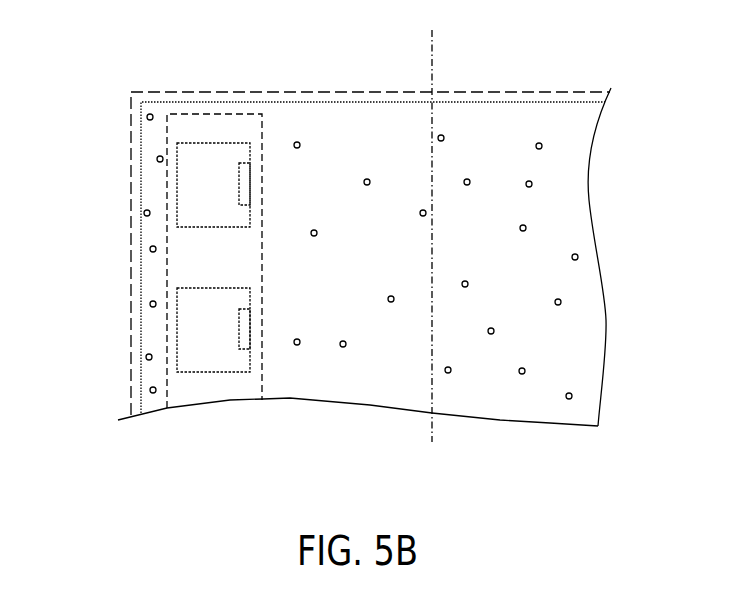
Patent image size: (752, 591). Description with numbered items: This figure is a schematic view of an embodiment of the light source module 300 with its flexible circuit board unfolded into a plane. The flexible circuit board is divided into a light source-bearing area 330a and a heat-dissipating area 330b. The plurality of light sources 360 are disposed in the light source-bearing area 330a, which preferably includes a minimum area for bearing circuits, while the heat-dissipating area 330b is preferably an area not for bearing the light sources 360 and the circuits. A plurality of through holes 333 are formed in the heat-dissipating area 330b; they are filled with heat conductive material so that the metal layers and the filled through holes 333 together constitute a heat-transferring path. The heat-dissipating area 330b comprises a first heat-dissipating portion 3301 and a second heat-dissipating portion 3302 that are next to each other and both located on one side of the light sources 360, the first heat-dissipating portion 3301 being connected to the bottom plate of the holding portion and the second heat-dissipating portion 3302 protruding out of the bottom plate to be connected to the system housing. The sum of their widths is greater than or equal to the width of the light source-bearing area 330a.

The light source module 300 is at (85, 41).
The light source-bearing area 330a is at (243, 125).
The heat-dissipating area 330b is at (502, 472).
The first heat-dissipating portion 3301 is at (318, 383).
The second heat-dissipating portion 3302 is at (542, 410).
The through holes 333 is at (562, 302).
The light sources 360 is at (207, 159).